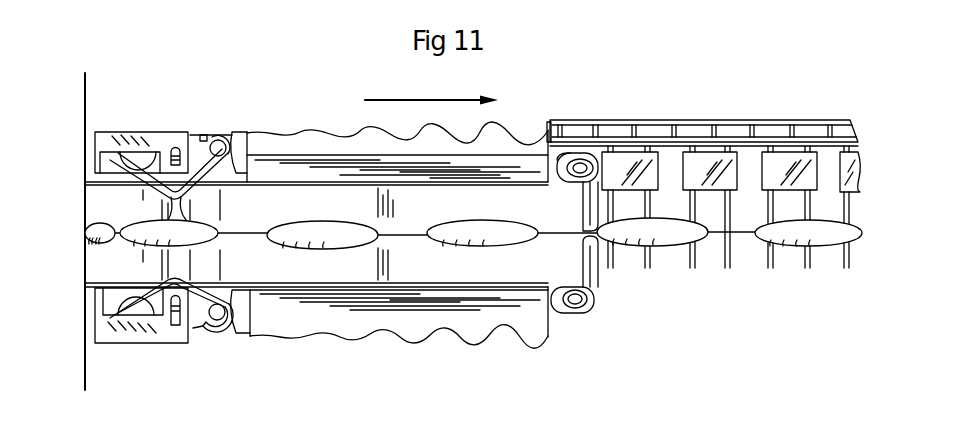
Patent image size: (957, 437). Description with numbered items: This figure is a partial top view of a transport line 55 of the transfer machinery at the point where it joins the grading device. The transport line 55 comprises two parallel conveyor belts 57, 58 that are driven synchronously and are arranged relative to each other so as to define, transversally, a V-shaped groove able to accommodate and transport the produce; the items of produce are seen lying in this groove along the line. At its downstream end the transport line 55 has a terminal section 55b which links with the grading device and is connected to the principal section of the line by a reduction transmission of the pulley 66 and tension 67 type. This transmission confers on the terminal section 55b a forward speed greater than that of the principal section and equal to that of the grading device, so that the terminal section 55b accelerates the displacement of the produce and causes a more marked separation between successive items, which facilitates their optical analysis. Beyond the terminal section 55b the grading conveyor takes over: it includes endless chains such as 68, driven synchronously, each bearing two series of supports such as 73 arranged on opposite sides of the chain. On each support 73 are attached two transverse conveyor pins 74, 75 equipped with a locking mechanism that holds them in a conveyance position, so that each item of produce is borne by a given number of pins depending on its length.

The transport line 55 is at (102, 258).
The terminal section 55b is at (561, 322).
The conveyor belt 57 is at (585, 268).
The conveyor belt 58 is at (567, 197).
The pulley 66 is at (216, 322).
The tension 67 is at (125, 347).
The endless chain 68 is at (690, 122).
The support 73 is at (777, 163).
The conveyor pin 74 is at (767, 263).
The conveyor pin 75 is at (805, 268).